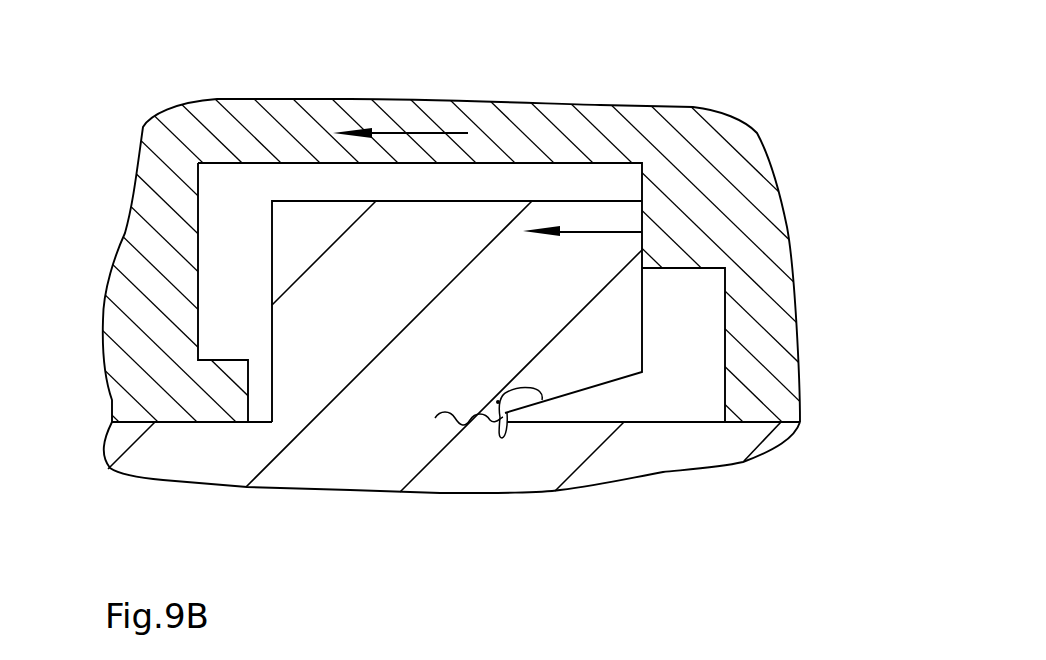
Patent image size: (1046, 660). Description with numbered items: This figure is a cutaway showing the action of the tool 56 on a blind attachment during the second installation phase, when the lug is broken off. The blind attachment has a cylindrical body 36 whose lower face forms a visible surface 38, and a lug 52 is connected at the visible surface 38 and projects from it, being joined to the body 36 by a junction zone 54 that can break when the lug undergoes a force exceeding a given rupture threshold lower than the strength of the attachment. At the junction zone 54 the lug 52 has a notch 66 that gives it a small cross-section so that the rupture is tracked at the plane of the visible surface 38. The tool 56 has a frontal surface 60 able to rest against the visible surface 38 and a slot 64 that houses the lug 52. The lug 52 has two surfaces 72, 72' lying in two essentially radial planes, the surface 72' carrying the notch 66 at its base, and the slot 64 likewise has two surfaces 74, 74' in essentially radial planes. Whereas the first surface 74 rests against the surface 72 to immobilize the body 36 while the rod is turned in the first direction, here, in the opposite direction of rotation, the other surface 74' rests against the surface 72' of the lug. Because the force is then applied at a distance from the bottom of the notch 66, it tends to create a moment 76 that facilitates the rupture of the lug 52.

The body 36 is at (375, 468).
The visible surface 38 is at (695, 422).
The lug 52 is at (468, 230).
The junction zone 54 is at (642, 303).
The tool 56 is at (254, 118).
The frontal surface 60 is at (162, 422).
The slot 64 is at (222, 257).
The notch 66 is at (607, 402).
The surface of the lug 72 is at (180, 161).
The surface of the lug 72' is at (766, 278).
The surface of the slot 74 is at (158, 322).
The surface of the slot 74' is at (720, 128).
The moment 76 is at (542, 400).